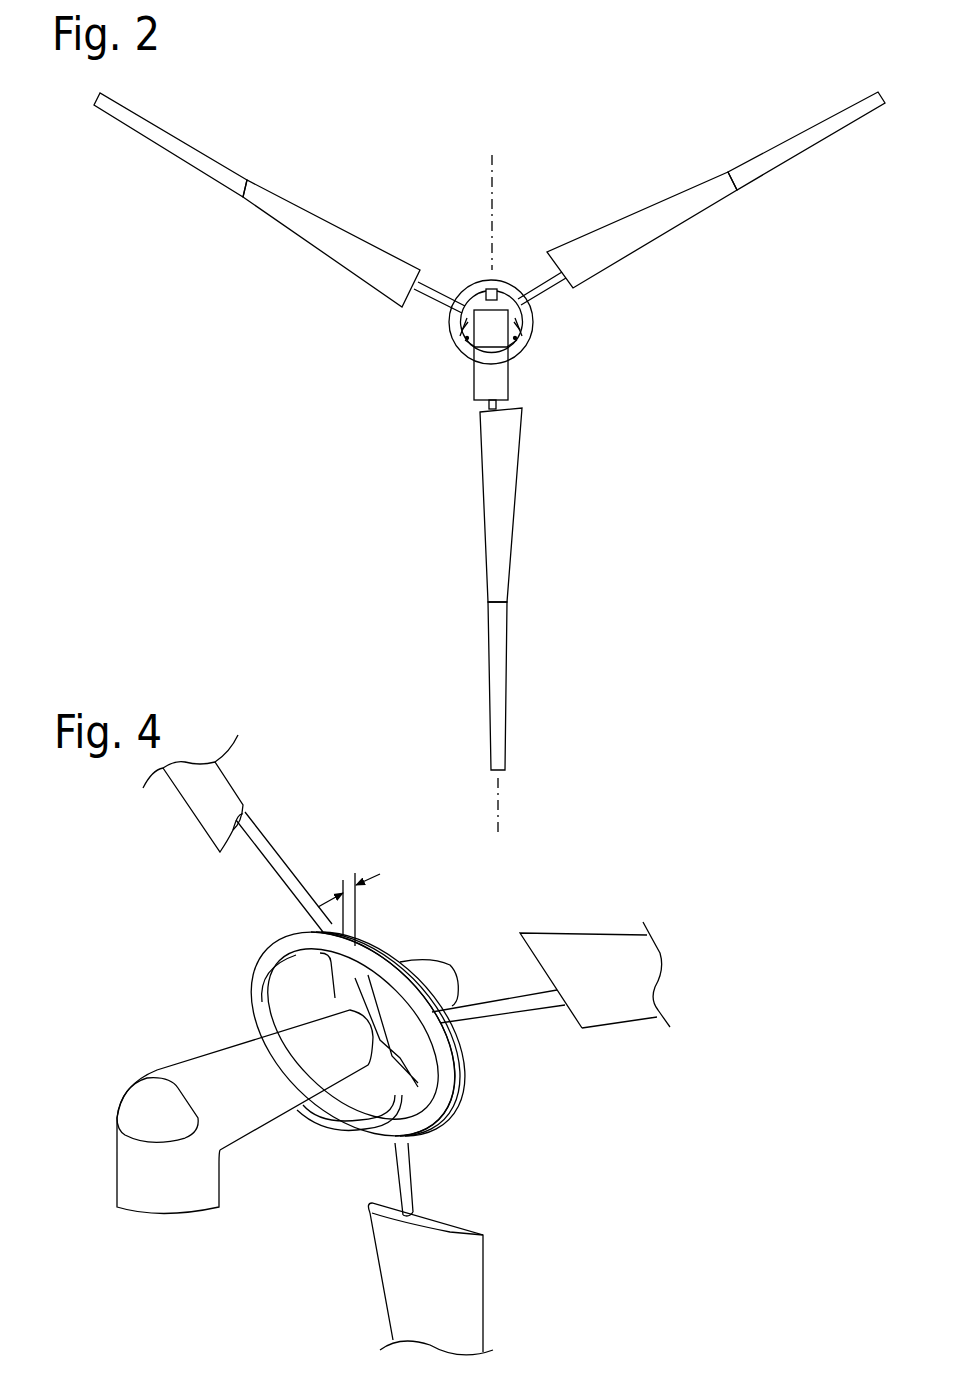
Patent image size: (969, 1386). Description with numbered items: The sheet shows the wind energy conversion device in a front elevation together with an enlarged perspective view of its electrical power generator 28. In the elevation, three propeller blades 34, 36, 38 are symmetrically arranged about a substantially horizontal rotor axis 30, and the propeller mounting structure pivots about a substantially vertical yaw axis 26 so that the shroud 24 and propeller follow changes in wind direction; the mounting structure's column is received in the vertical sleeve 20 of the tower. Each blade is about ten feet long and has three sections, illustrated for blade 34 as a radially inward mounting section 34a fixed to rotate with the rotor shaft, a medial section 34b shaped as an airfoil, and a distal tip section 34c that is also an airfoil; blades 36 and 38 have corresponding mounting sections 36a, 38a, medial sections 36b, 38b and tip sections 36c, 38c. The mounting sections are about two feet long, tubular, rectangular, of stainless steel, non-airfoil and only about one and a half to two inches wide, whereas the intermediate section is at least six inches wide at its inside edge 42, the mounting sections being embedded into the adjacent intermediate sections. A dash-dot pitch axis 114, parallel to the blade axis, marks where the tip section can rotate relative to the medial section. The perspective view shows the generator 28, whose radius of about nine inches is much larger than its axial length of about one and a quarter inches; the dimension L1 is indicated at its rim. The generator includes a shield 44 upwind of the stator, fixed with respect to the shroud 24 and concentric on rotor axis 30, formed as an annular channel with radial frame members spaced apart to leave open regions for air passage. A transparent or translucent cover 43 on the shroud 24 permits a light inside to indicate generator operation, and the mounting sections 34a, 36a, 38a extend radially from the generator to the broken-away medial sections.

In FIG. 2, the vertical sleeve 20 is at (474, 378).
In FIG. 4, the shroud 24 is at (205, 1058).
In FIG. 2, the yaw axis 26 is at (494, 193).
In FIG. 2, the electrical power generator 28 is at (532, 345).
In FIG. 4, the electrical power generator 28 is at (262, 976).
In FIG. 4, the rotor axis 30 is at (463, 966).
In FIG. 2, the propeller blade 34 is at (701, 200).
In FIG. 2, the mounting section 34a is at (548, 293).
In FIG. 4, the mounting section 34a is at (492, 1008).
In FIG. 2, the medial section 34b is at (668, 208).
In FIG. 4, the medial section 34b is at (592, 942).
In FIG. 2, the tip section 34c is at (817, 132).
In FIG. 2, the propeller blade 36 is at (500, 589).
In FIG. 4, the mounting section 36a is at (408, 1180).
In FIG. 2, the medial section 36b is at (503, 502).
In FIG. 4, the medial section 36b is at (475, 1288).
In FIG. 2, the tip section 36c is at (497, 670).
In FIG. 2, the propeller blade 38 is at (279, 209).
In FIG. 2, the mounting section 38a is at (432, 292).
In FIG. 4, the mounting section 38a is at (285, 878).
In FIG. 2, the medial section 38b is at (335, 236).
In FIG. 4, the medial section 38b is at (222, 782).
In FIG. 2, the tip section 38c is at (175, 142).
In FIG. 2, the inside edge 42 is at (547, 263).
In FIG. 4, the cover 43 is at (133, 1106).
In FIG. 2, the shield 44 is at (461, 338).
In FIG. 4, the shield 44 is at (419, 1110).
In FIG. 2, the pitch axis 114 is at (500, 815).
In FIG. 4, the rim thickness dimension L1 is at (365, 877).